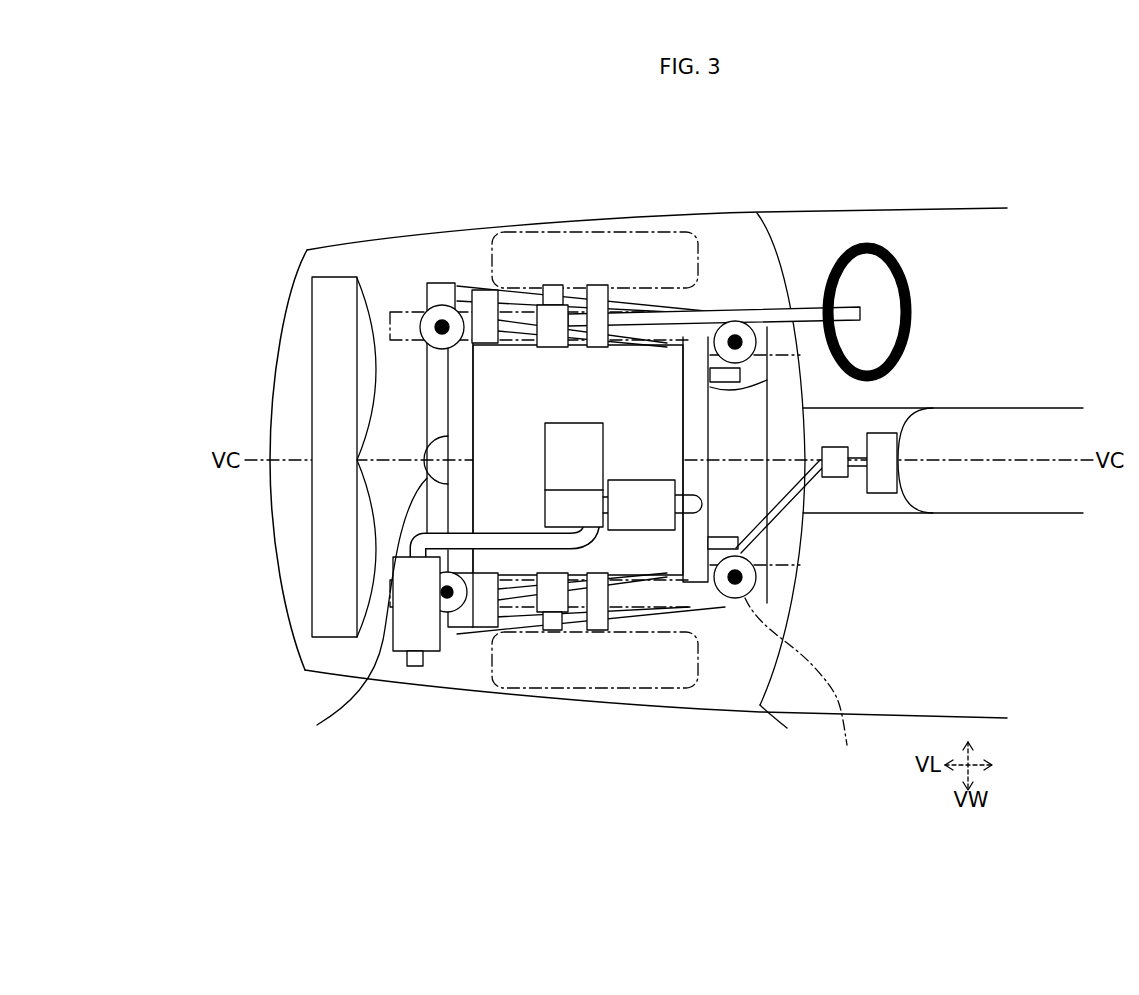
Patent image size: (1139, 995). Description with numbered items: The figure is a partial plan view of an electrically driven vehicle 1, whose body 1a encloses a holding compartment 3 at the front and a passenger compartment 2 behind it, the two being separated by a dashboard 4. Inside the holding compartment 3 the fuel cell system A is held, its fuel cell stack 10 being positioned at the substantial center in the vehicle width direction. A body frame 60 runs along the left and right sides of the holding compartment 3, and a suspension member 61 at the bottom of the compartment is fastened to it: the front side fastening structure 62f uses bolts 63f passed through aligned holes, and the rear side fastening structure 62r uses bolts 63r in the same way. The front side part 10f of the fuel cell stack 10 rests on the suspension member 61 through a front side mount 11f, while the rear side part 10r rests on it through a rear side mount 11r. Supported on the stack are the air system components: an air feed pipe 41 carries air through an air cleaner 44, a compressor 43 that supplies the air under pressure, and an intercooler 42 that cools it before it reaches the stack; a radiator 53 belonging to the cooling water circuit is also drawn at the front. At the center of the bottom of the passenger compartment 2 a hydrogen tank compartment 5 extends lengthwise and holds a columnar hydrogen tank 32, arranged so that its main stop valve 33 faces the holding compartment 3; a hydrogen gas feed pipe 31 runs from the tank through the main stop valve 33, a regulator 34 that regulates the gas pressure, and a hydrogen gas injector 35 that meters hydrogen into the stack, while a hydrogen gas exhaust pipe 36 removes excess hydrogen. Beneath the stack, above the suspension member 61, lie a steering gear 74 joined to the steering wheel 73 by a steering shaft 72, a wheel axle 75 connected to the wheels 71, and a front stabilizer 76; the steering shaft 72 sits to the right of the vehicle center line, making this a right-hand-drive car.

The electrically driven vehicle 1 is at (608, 400).
The vehicle body 1a is at (263, 573).
The passenger compartment 2 is at (951, 276).
The holding compartment 3 is at (317, 425).
The dashboard 4 is at (770, 270).
The hydrogen tank compartment 5 is at (1018, 408).
The fuel cell stack 10 is at (593, 537).
The front side part of fuel cell stack 10f is at (448, 625).
The rear side part of fuel cell stack 10r is at (708, 582).
The front side mount 11f is at (346, 610).
The rear side mount 11r is at (790, 723).
The hydrogen gas feed pipe 31 is at (815, 478).
The hydrogen tank 32 is at (973, 497).
The main stop valve 33 is at (888, 494).
The regulator 34 is at (847, 478).
The hydrogen gas injector 35 is at (767, 580).
The hydrogen gas exhaust pipe 36 is at (767, 382).
The air feed pipe 41 is at (487, 551).
The intercooler 42 is at (632, 512).
The compressor 43 is at (587, 510).
The air cleaner 44 is at (393, 652).
The radiator 53 is at (307, 277).
The body frame 60 is at (804, 689).
The suspension member 61 is at (486, 303).
The front side fastening structure 62f is at (412, 304).
The rear side fastening structure 62r is at (728, 317).
The bolts 63f is at (442, 322).
The bolts 63r is at (738, 340).
The wheels 71 is at (642, 230).
The steering shaft 72 is at (807, 305).
The steering wheel 73 is at (887, 243).
The steering gear 74 is at (552, 288).
The wheel axle 75 is at (597, 288).
The front stabilizer 76 is at (487, 302).
The fuel cell system A is at (412, 416).